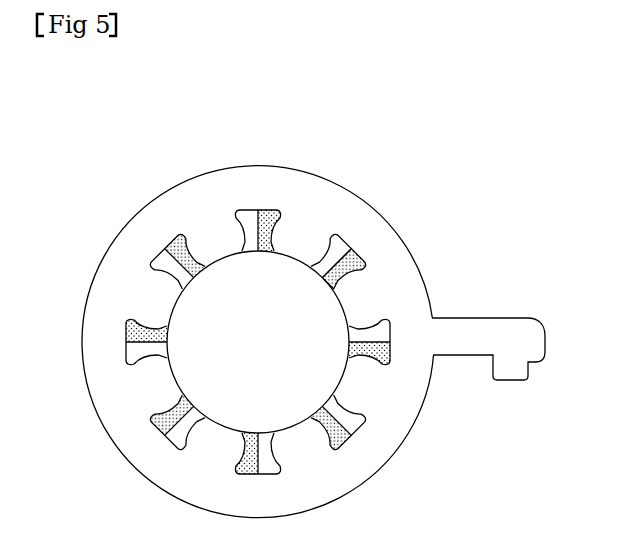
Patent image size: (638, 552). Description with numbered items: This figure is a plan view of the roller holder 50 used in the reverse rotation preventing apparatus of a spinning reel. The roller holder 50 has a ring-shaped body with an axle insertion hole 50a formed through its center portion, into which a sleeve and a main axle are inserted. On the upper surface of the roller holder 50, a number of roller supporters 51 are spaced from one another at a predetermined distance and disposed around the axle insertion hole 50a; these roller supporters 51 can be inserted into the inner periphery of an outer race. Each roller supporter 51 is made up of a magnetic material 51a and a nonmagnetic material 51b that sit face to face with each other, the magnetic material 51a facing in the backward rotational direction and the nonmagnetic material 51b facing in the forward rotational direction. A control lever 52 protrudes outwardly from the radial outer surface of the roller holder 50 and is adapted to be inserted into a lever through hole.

The roller holder 50 is at (130, 181).
The axle insertion hole 50a is at (305, 372).
The roller supporters 51 is at (417, 158).
The magnetic material 51a is at (350, 287).
The nonmagnetic material 51b is at (327, 241).
The control lever 52 is at (483, 318).